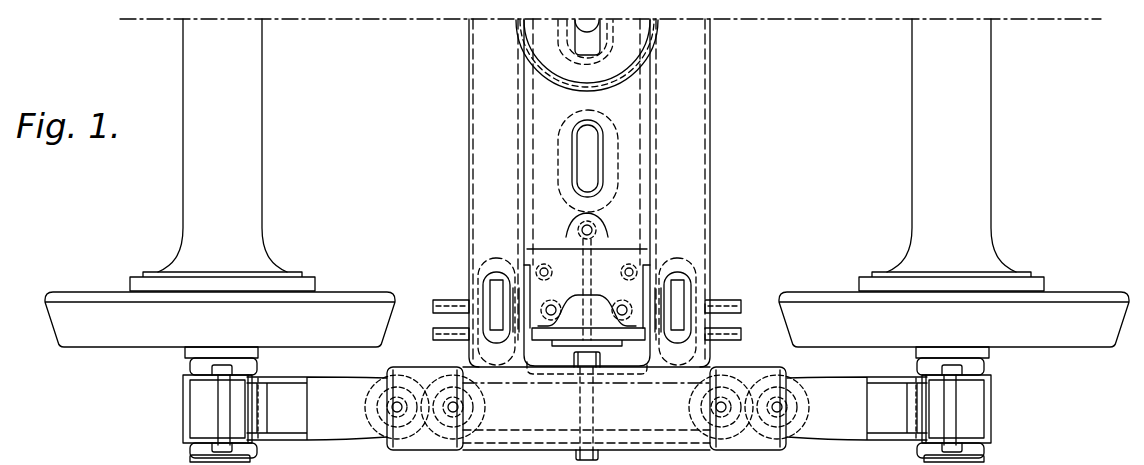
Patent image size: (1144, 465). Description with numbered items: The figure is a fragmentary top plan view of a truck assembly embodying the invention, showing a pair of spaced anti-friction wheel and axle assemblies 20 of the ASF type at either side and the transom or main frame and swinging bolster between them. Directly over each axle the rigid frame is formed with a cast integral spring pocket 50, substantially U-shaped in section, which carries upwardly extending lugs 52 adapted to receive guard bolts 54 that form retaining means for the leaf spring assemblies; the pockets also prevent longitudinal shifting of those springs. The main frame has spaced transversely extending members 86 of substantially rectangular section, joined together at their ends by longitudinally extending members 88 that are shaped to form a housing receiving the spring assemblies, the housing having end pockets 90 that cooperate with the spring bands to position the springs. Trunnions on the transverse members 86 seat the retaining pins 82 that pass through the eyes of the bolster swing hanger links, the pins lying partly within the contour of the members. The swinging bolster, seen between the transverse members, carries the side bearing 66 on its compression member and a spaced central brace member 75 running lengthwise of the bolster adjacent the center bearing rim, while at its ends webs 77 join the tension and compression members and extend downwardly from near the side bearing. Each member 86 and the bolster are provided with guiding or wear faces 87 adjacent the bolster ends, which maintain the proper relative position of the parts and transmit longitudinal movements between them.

The wheel and axle assembly 20 is at (256, 188).
The central brace member 75 is at (573, 37).
The transversely extending member 86 is at (697, 118).
The web 77 is at (592, 267).
The side bearing 66 is at (607, 270).
The guiding or wear face 87 is at (483, 278).
The retaining pin 82 is at (700, 298).
The lug 52 is at (190, 372).
The bolt 54 is at (222, 402).
The spring pocket 50 is at (195, 446).
The longitudinally extending member 88 is at (480, 450).
The end pocket 90 is at (604, 458).